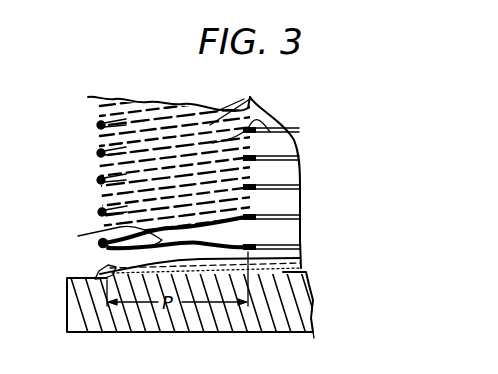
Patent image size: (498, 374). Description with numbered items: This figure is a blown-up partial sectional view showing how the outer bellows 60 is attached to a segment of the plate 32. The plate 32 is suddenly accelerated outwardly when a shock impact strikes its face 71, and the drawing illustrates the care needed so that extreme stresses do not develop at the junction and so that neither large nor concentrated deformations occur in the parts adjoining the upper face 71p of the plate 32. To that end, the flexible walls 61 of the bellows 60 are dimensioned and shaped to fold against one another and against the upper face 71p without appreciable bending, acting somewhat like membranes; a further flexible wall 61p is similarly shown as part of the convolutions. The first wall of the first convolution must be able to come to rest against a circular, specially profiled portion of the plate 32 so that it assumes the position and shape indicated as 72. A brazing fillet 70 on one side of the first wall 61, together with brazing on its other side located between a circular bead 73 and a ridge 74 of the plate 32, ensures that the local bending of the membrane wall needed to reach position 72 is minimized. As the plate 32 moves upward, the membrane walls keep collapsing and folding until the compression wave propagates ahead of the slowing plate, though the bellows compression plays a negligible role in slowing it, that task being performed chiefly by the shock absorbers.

The bellows 60 is at (100, 104).
The flexible wall 61 is at (104, 239).
The flexible wall 61p is at (255, 97).
The brazing fillet 70 is at (100, 275).
The face 71 is at (121, 333).
The upper face 71p is at (300, 268).
The position 72 is at (312, 262).
The circular bead 73 is at (107, 274).
The ridge 74 is at (114, 283).
The plate 32 is at (313, 299).